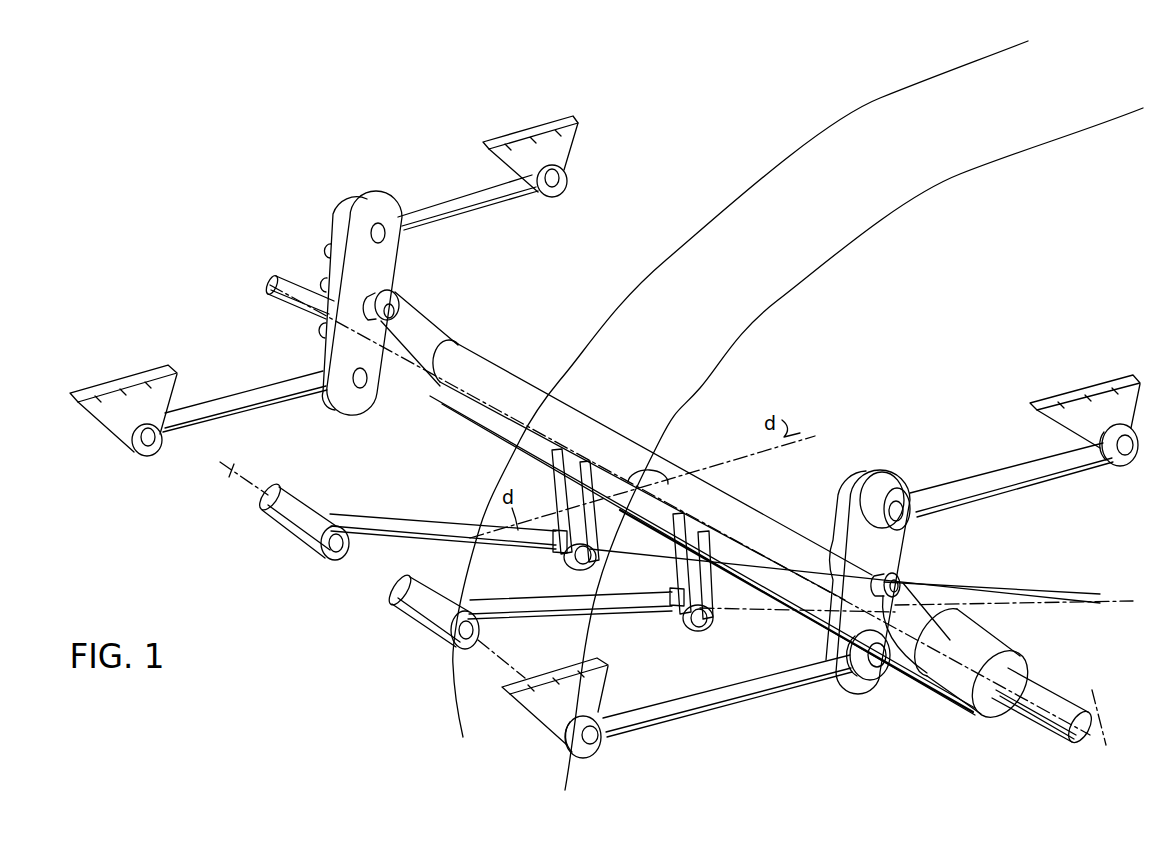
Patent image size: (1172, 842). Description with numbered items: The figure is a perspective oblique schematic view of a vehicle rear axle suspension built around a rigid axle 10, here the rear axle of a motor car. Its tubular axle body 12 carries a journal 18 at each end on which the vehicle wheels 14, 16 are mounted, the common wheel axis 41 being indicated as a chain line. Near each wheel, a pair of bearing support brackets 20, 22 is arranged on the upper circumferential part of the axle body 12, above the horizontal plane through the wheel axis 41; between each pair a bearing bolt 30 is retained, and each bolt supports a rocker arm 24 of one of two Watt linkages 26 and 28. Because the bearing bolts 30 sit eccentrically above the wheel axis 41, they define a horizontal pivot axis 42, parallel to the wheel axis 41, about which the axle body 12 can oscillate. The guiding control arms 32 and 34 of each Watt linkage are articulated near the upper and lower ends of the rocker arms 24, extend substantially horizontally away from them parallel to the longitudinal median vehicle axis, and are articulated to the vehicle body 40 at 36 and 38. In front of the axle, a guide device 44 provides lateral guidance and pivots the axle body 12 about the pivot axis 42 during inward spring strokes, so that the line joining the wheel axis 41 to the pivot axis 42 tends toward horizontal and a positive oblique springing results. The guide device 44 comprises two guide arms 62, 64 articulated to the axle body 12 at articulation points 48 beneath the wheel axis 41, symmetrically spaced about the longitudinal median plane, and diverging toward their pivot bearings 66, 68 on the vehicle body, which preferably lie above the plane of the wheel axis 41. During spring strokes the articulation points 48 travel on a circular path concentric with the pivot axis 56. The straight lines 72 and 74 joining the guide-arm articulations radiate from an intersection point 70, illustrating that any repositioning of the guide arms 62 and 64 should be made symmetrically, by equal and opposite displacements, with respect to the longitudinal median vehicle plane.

The rigid axle 10 is at (652, 461).
The tubular axle body 12 is at (576, 427).
The vehicle wheel 14 is at (777, 195).
The vehicle wheel 16 is at (854, 449).
The journal 18 is at (1025, 720).
The bearing support bracket 20 is at (968, 604).
The bearing support bracket 22 is at (836, 535).
The rocker arm 24 is at (363, 260).
The Watt linkage 26 is at (863, 563).
The Watt linkage 28 is at (361, 285).
The bearing bolt 30 is at (392, 285).
The guiding control arm 32 is at (452, 196).
The guiding control arm 34 is at (262, 395).
The articulation point 36 is at (133, 447).
The articulation point 38 is at (552, 190).
The vehicle body 40 is at (605, 424).
The wheel axis 41 is at (1084, 707).
The pivot axis 42 is at (335, 272).
The guide device 44 is at (461, 580).
The articulation point 48 is at (587, 560).
The pivot axis 56 is at (224, 480).
The guide arm 62 is at (640, 612).
The guide arm 64 is at (393, 515).
The pivot bearing 66 is at (420, 605).
The pivot bearing 68 is at (285, 522).
The intersection point 70 is at (1098, 601).
The straight line 72 is at (775, 559).
The straight line 74 is at (754, 610).